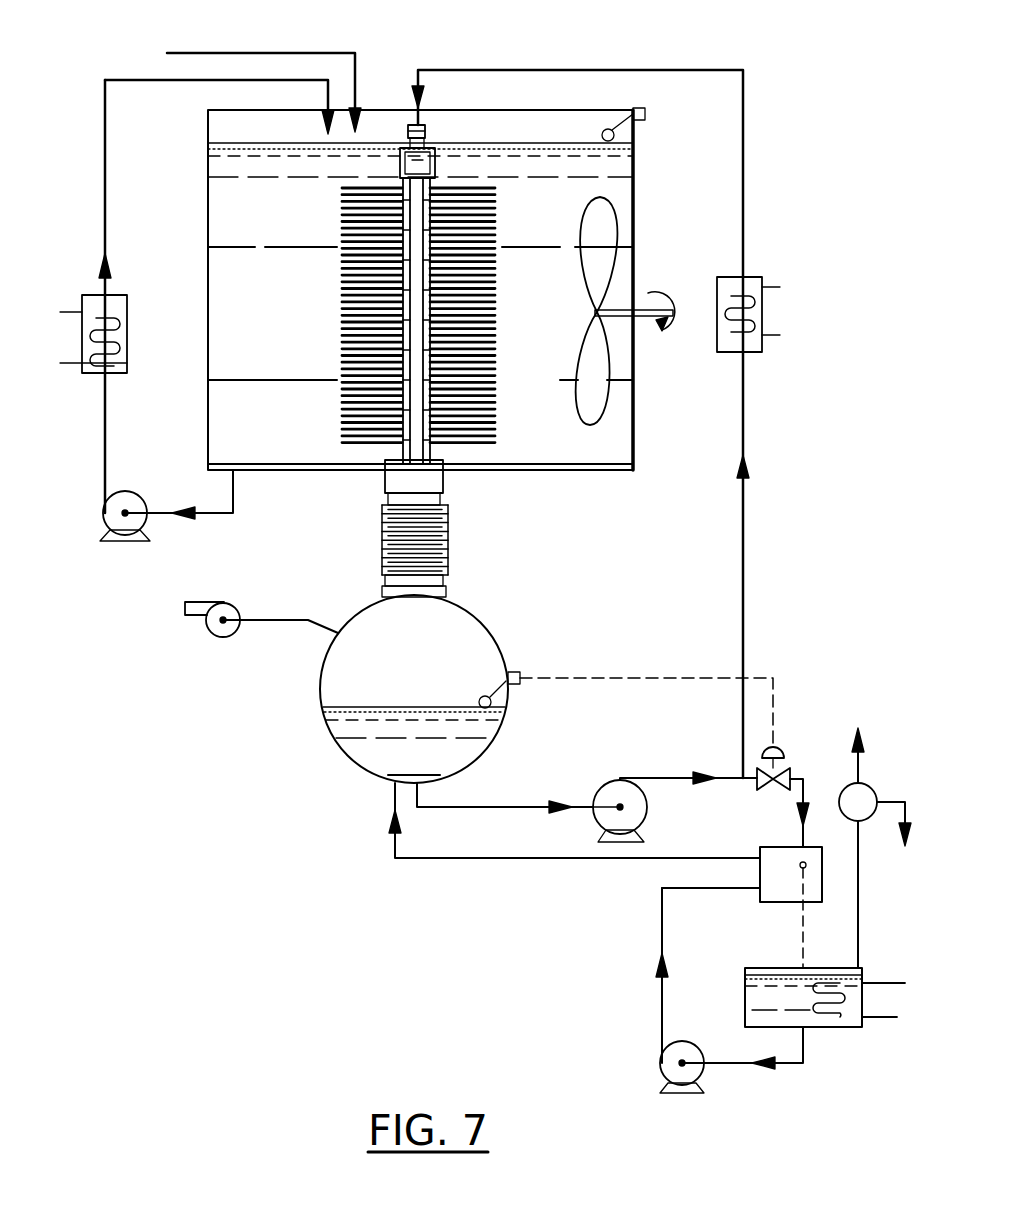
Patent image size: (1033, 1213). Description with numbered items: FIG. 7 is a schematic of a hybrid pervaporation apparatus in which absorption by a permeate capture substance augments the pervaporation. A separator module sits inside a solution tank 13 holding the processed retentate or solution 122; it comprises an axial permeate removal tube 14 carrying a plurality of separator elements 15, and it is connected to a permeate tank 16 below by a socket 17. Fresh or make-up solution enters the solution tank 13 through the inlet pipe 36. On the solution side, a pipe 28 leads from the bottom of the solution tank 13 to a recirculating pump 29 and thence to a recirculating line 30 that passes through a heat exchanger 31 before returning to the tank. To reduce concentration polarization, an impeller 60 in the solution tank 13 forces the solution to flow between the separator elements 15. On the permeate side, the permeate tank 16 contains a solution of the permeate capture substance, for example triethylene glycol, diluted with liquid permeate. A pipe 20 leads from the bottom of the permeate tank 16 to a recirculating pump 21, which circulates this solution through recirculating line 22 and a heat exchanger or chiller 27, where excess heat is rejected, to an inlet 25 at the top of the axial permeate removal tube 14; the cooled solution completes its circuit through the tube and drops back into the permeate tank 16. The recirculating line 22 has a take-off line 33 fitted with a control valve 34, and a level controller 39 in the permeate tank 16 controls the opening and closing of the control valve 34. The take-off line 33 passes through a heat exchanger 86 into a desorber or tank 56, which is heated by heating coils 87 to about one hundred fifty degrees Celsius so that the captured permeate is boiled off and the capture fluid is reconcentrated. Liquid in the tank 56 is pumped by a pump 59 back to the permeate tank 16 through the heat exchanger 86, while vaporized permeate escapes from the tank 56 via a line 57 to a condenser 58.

The solution tank 13 is at (633, 430).
The axial permeate removal tube 14 is at (433, 210).
The separator elements 15 is at (483, 245).
The permeate tank 16 is at (473, 620).
The socket 17 is at (443, 484).
The pipe 20 is at (525, 808).
The recirculating pump 21 is at (640, 812).
The recirculating line 22 is at (588, 70).
The inlet 25 is at (427, 128).
The chiller 27 is at (755, 277).
The pipe 28 is at (218, 515).
The recirculating pump 29 is at (128, 497).
The recirculating line 30 is at (130, 80).
The heat exchanger 31 is at (90, 295).
The take-off line 33 is at (748, 781).
The control valve 34 is at (790, 745).
The fresh or make-up solution inlet pipe 36 is at (310, 52).
The level controller 39 is at (520, 672).
The desorber or tank 56 is at (745, 990).
The line 57 is at (858, 895).
The condenser 58 is at (871, 793).
The pump 59 is at (660, 1068).
The impeller 60 is at (603, 232).
The heat exchanger 86 is at (778, 893).
The heating coils 87 is at (878, 982).
The processed retentate or solution 122 is at (291, 228).